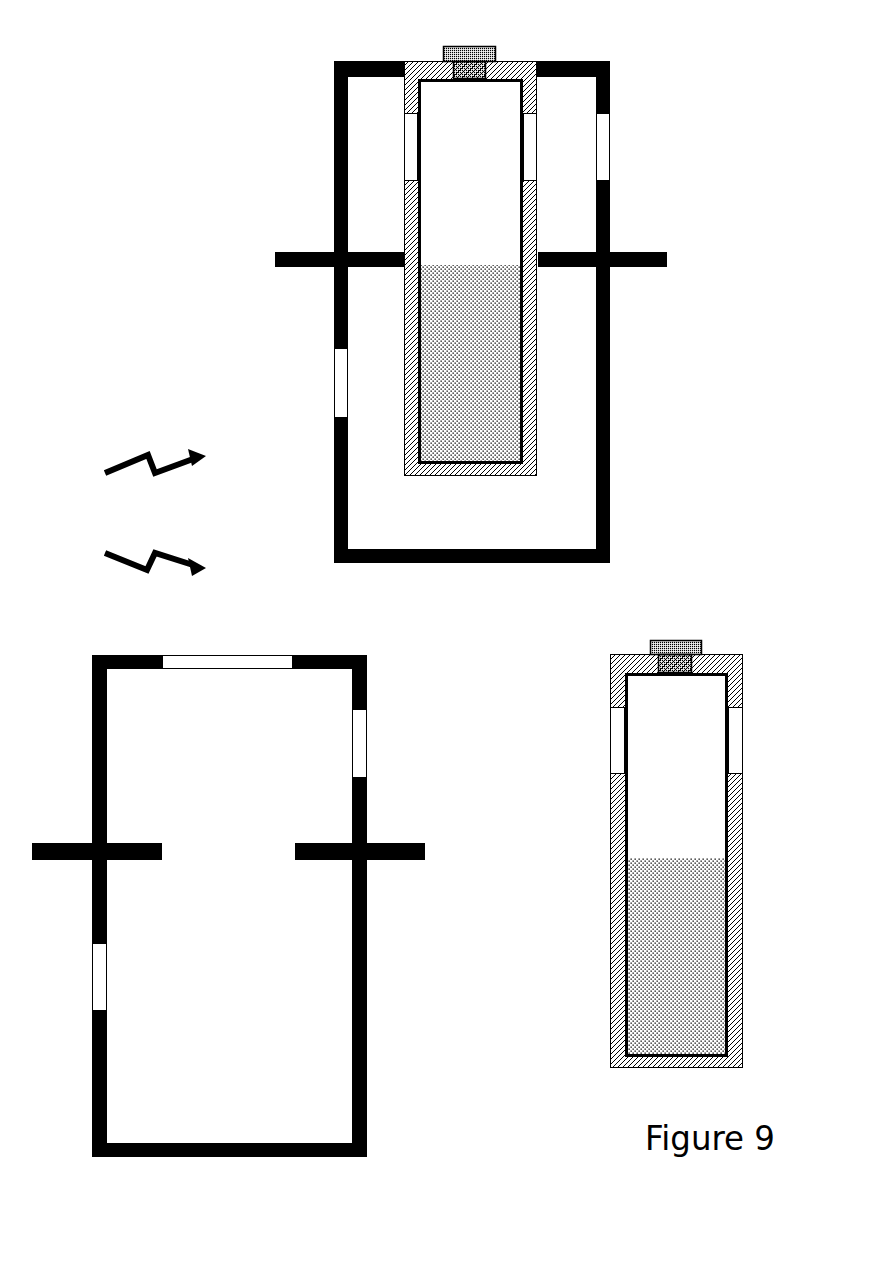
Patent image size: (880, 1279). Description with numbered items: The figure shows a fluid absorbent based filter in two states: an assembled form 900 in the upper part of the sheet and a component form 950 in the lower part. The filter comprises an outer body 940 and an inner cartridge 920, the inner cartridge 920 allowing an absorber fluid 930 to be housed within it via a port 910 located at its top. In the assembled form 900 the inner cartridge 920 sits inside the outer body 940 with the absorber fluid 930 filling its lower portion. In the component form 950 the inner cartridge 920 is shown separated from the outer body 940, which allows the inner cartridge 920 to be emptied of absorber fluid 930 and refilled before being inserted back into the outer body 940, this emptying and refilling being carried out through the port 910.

The assembled form 900 is at (126, 479).
The component form 950 is at (126, 549).
The port 910 is at (430, 42).
The inner cartridge 920 is at (408, 213).
The absorber fluid 930 is at (437, 315).
The outer body 940 is at (612, 453).